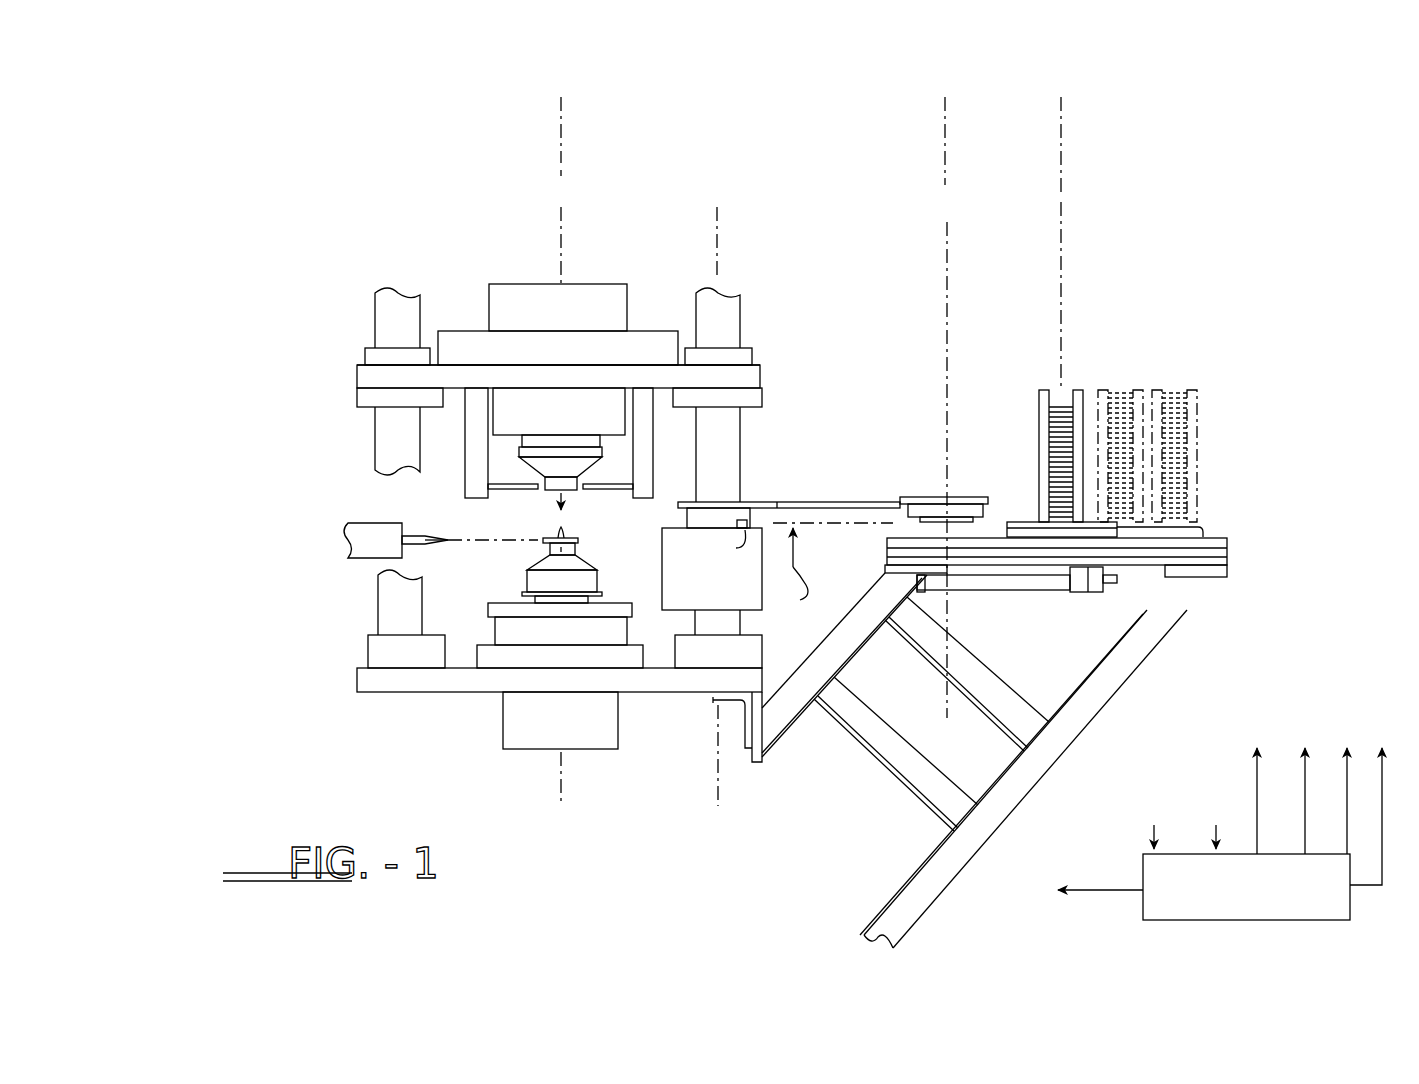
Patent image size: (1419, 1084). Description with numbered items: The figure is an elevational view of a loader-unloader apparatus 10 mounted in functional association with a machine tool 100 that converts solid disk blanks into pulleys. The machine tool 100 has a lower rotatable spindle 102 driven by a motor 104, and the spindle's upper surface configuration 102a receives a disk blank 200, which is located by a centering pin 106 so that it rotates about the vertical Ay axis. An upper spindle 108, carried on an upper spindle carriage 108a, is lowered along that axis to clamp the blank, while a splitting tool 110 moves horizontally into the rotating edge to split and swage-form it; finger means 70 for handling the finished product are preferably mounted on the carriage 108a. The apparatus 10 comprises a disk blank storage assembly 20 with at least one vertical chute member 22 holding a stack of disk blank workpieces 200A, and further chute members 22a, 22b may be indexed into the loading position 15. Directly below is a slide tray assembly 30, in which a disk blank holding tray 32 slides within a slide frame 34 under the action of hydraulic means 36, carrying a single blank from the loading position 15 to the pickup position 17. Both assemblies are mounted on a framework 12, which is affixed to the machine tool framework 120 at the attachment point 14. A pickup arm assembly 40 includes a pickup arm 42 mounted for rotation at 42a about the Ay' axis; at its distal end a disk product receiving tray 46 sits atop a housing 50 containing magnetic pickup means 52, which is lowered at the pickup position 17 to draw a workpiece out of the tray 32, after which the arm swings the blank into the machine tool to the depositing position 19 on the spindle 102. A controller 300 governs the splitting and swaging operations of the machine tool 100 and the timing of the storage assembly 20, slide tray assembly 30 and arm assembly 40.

The machine tool 100 is at (390, 244).
The loader-unloader apparatus 10 is at (1216, 264).
The disk blank depositing position 19 is at (561, 140).
The disk blank pickup position 17 is at (945, 130).
The disk blank loading position 15 is at (1061, 130).
The upper spindle carriage 108a is at (365, 378).
The upper spindle 108 is at (555, 470).
The finger means 70 is at (512, 484).
The splitting tool 110 is at (427, 534).
The disk blank 200 is at (553, 539).
The centering pin 106 is at (563, 533).
The upper surface configuration 102a is at (550, 548).
The lower rotatable spindle 102 is at (532, 580).
The motor 104 is at (510, 723).
The machine tool framework 120 is at (715, 694).
The attachment point 14 is at (763, 733).
The framework 12 is at (1065, 759).
The rotational mount 42a is at (722, 500).
The pickup arm 42 is at (810, 500).
The pickup arm assembly 40 is at (898, 484).
The disk product receiving tray 46 is at (970, 497).
The housing 50 is at (985, 513).
The magnetic pickup means 52 is at (930, 522).
The disk blank holding tray 32 is at (968, 543).
The hydraulic means 36 is at (1035, 585).
The vertical chute member 22 is at (1038, 395).
The disk blank workpieces 200A is at (1063, 398).
The chute member 22a is at (1145, 392).
The chute member 22b is at (1200, 392).
The disk blank storage assembly 20 is at (1205, 454).
The slide tray assembly 30 is at (1215, 532).
The slide frame 34 is at (1227, 547).
The controller 300 is at (1252, 920).